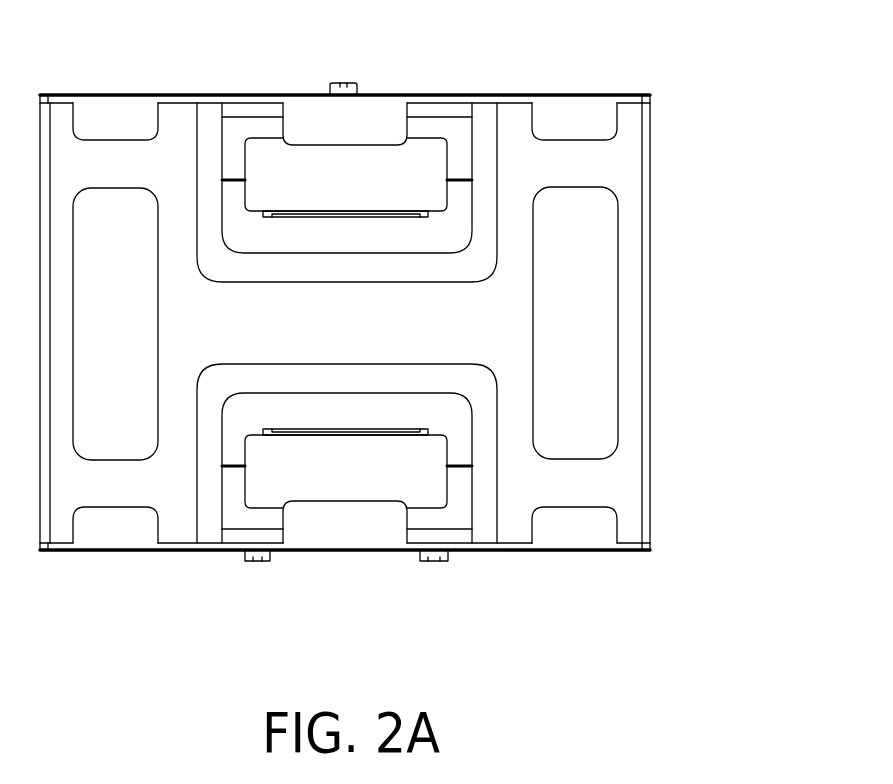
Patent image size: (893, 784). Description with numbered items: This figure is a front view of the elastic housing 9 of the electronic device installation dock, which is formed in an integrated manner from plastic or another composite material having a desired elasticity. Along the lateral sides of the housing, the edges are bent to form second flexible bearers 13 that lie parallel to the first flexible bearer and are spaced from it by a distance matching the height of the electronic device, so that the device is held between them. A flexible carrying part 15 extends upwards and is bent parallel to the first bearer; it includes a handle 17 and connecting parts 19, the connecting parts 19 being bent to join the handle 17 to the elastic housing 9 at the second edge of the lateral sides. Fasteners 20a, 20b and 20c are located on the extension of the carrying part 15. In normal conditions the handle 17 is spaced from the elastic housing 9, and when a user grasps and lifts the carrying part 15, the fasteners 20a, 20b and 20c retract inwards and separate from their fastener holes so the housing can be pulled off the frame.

The elastic housing 9 is at (688, 331).
The second flexible bearer 13 is at (118, 118).
The flexible carrying part 15 is at (218, 215).
The handle 17 is at (410, 238).
The connecting part 19 is at (250, 127).
The fastener 20a is at (345, 83).
The fastener 20b is at (260, 563).
The fastener 20c is at (440, 563).